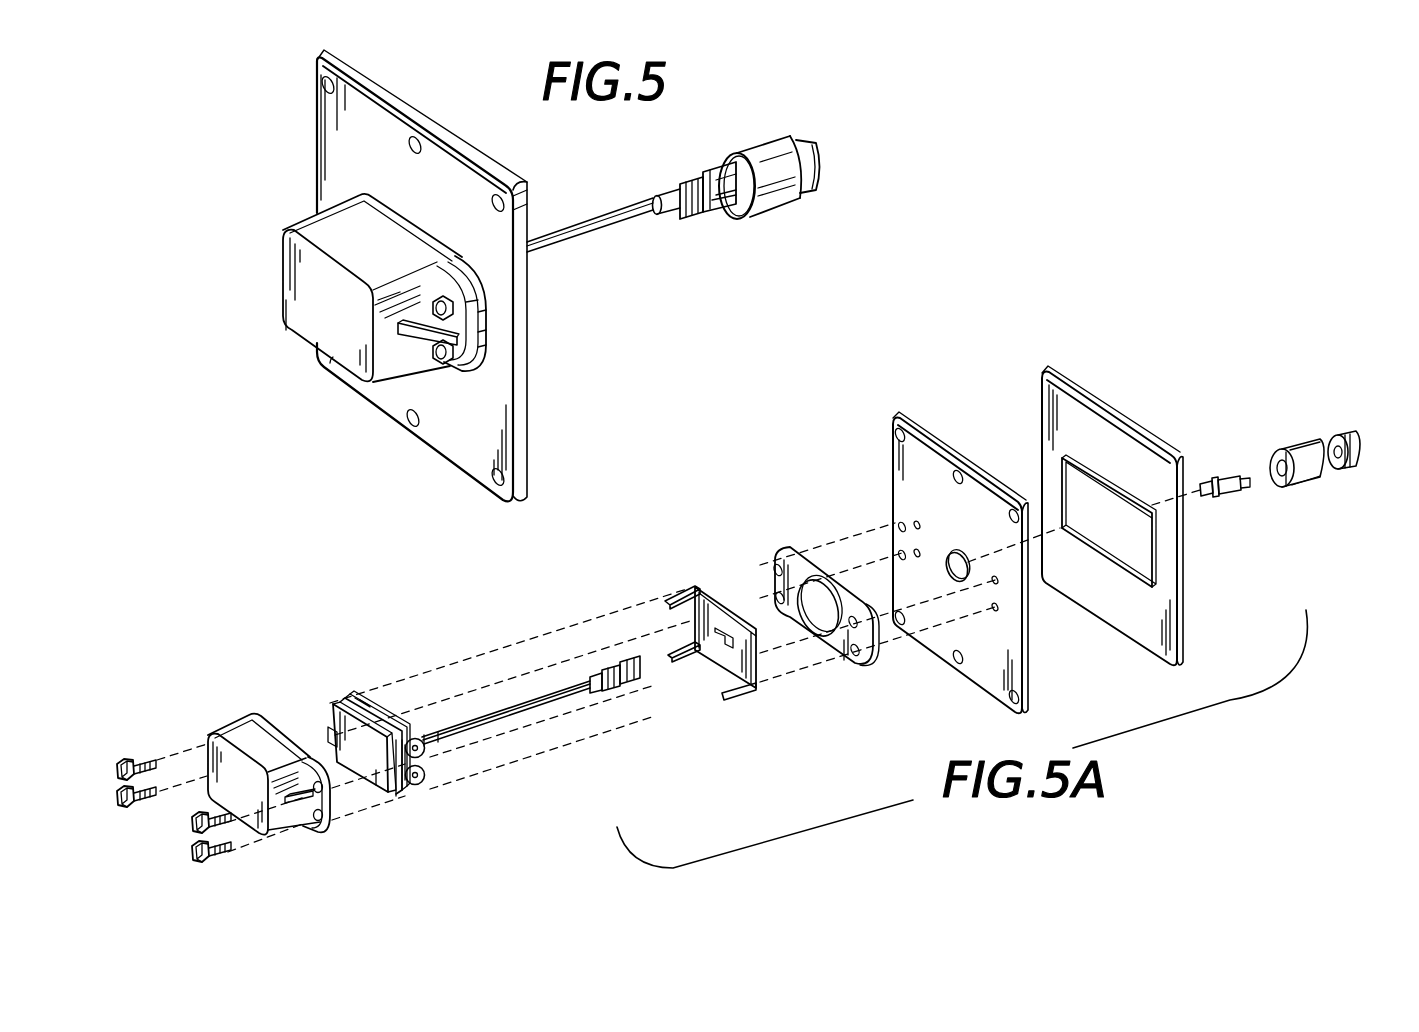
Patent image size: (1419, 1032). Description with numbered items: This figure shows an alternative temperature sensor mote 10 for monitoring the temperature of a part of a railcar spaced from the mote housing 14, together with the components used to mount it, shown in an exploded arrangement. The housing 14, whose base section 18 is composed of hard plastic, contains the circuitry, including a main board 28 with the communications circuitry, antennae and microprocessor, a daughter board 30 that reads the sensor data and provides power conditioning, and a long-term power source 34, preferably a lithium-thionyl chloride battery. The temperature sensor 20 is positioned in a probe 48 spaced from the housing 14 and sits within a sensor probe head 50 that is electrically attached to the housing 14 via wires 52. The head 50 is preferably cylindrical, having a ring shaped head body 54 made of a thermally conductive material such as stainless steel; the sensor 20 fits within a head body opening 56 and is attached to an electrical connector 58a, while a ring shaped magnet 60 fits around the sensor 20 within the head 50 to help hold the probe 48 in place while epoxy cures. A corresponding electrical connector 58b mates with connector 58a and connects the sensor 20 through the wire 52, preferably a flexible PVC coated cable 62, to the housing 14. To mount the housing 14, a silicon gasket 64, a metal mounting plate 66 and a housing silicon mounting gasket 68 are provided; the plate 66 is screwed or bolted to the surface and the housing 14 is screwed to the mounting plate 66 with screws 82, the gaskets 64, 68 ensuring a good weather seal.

In FIG. 5, the mote 10 is at (296, 312).
In FIG. 5A, the mote 10 is at (560, 802).
In FIG. 5, the housing 14 is at (320, 328).
In FIG. 5A, the housing 14 is at (245, 738).
In FIG. 5A, the base section 18 is at (702, 590).
In FIG. 5A, the temperature sensor 20 is at (1240, 482).
In FIG. 5A, the main board 28 is at (330, 735).
In FIG. 5A, the daughter board 30 is at (392, 780).
In FIG. 5A, the long-term power source 34 is at (378, 706).
In FIG. 5, the probe 48 is at (835, 164).
In FIG. 5A, the probe 48 is at (1393, 510).
In FIG. 5, the sensor probe head 50 is at (710, 220).
In FIG. 5A, the sensor probe head 50 is at (1388, 493).
In FIG. 5, the wires 52 is at (612, 218).
In FIG. 5A, the wires 52 is at (545, 698).
In FIG. 5A, the head body 54 is at (1296, 446).
In FIG. 5A, the head body opening 56 is at (1276, 465).
In FIG. 5A, the electrical connector 58a is at (1205, 480).
In FIG. 5A, the corresponding electrical connector 58b is at (612, 680).
In FIG. 5A, the ring shaped magnet 60 is at (1350, 430).
In FIG. 5A, the cable 62 is at (505, 700).
In FIG. 5, the silicon gasket 64 is at (528, 318).
In FIG. 5A, the silicon gasket 64 is at (1105, 613).
In FIG. 5, the metal mounting plate 66 is at (514, 270).
In FIG. 5A, the metal mounting plate 66 is at (972, 678).
In FIG. 5, the housing silicon mounting gasket 68 is at (465, 349).
In FIG. 5A, the housing silicon mounting gasket 68 is at (820, 645).
In FIG. 5A, the screws 82 is at (145, 788).